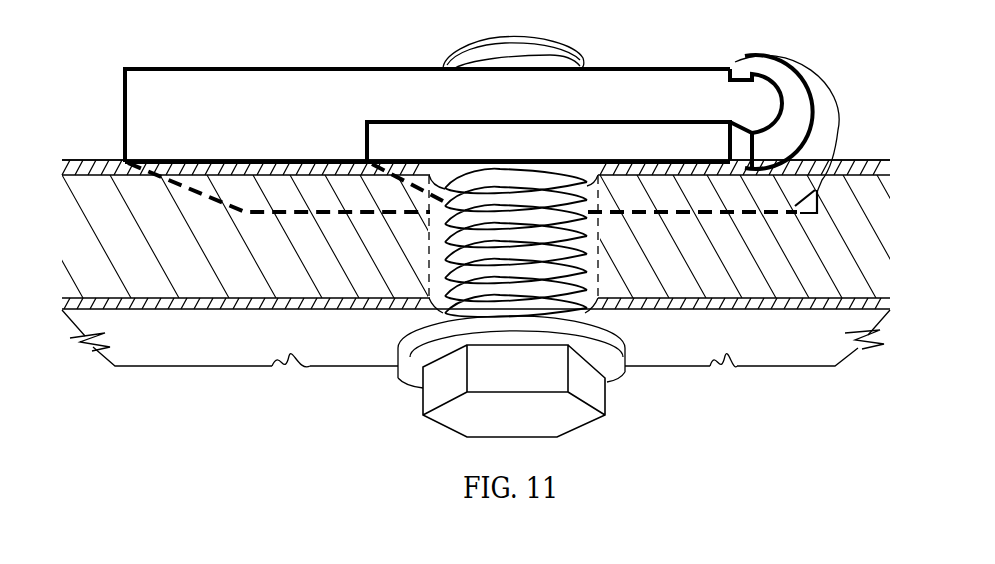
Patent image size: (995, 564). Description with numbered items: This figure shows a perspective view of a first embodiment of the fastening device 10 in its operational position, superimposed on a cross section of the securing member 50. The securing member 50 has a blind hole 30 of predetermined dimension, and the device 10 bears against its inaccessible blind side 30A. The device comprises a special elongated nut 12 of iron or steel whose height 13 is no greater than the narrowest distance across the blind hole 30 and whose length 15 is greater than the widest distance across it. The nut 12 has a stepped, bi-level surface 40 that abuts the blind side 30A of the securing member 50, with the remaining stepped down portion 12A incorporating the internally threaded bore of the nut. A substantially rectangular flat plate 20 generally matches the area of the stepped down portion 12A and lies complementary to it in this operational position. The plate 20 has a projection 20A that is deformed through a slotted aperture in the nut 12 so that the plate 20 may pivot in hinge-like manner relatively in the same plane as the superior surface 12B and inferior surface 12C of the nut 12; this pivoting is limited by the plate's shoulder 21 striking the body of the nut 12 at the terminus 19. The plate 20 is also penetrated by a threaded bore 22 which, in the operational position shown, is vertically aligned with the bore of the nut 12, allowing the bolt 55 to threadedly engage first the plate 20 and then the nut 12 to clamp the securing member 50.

The fastening device 10 is at (145, 100).
The elongated nut 12 is at (184, 91).
The stepped down portion 12A is at (601, 119).
The superior surface 12B is at (238, 68).
The inferior surface 12C is at (311, 156).
The height 13 is at (124, 107).
The length 15 is at (421, 68).
The terminus 19 is at (758, 72).
The plate 20 is at (688, 145).
The projection 20A is at (813, 84).
The shoulder 21 is at (753, 146).
The threaded bore 22 is at (590, 201).
The blind hole 30 is at (423, 315).
The blind side 30A is at (875, 157).
The stepped, bi-level surface 40 is at (365, 133).
The securing member 50 is at (130, 370).
The bolt 55 is at (610, 418).